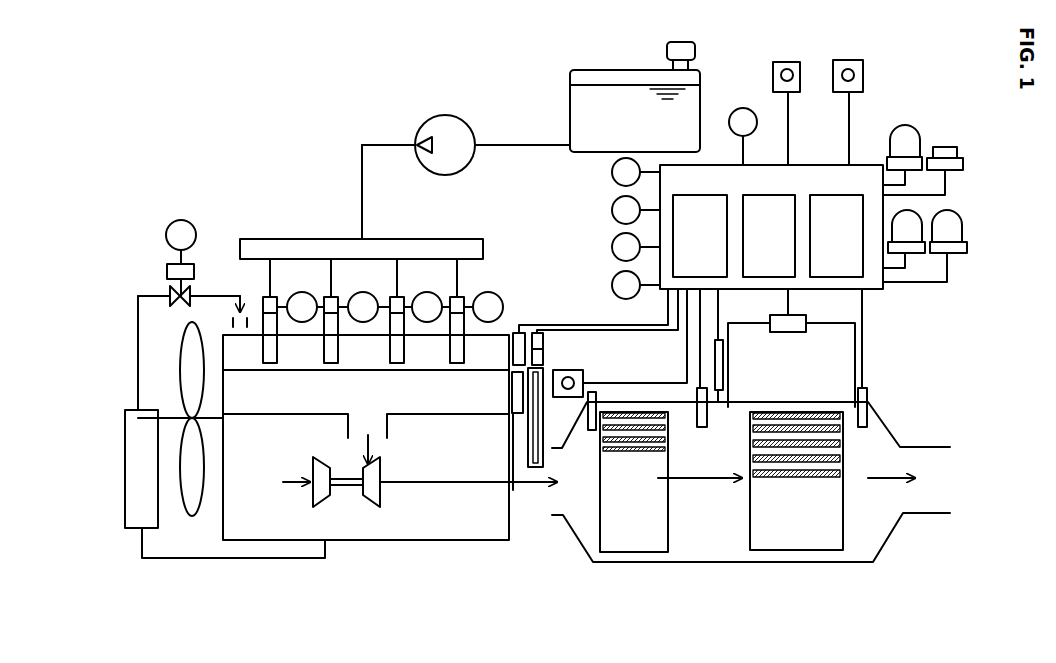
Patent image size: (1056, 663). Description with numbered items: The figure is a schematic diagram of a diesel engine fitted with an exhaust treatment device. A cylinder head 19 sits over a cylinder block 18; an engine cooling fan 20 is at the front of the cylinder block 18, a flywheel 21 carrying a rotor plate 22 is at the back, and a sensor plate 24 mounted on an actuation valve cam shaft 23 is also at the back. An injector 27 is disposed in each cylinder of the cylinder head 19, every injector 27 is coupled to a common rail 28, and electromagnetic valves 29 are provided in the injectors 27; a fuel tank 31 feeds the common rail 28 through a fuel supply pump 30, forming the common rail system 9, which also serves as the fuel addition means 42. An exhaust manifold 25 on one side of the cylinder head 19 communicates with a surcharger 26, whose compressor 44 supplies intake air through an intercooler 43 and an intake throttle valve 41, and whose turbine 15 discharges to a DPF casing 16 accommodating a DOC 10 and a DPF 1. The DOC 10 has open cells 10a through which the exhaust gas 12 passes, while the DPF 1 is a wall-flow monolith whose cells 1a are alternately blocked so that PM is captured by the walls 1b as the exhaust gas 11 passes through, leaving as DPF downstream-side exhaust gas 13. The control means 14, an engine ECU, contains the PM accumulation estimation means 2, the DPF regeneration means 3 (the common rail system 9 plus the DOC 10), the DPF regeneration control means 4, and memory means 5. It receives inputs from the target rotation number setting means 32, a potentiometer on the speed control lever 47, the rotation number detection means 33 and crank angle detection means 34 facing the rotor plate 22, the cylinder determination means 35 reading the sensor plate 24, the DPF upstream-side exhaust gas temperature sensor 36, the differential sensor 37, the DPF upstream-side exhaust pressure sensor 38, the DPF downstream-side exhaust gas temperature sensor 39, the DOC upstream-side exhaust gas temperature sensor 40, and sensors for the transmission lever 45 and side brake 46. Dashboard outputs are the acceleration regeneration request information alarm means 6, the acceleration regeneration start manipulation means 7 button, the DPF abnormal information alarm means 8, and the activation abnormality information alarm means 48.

The DPF 1 is at (802, 535).
The cells 1a is at (823, 450).
The walls 1b is at (780, 458).
The PM accumulation estimation means 2 is at (695, 203).
The DPF regeneration means 3 is at (481, 406).
The DPF regeneration control means 4 is at (765, 203).
The memory means 5 is at (836, 203).
The acceleration regeneration request information alarm means 6 is at (900, 135).
The acceleration regeneration start manipulation means 7 is at (945, 147).
The DPF abnormal information alarm means 8 is at (910, 238).
The common rail system 9 is at (490, 280).
The DOC 10 is at (633, 540).
The cells 10a is at (638, 432).
The exhaust gas 11 is at (700, 490).
The exhaust gas 12 is at (518, 483).
The DPF downstream-side exhaust gas 13 is at (883, 483).
The control means 14 is at (804, 176).
The turbine 15 is at (380, 495).
The DPF casing 16 is at (728, 563).
The cylinder block 18 is at (482, 542).
The cylinder head 19 is at (508, 330).
The engine cooling fan 20 is at (186, 352).
The flywheel 21 is at (548, 455).
The rotor plate 22 is at (541, 382).
The actuation valve cam shaft 23 is at (511, 392).
The sensor plate 24 is at (511, 414).
The exhaust manifold 25 is at (260, 407).
The surcharger 26 is at (350, 490).
The injector 27 is at (330, 355).
The common rail 28 is at (302, 239).
The electromagnetic valves 29 is at (325, 303).
The fuel supply pump 30 is at (457, 130).
The fuel tank 31 is at (697, 73).
The target rotation number setting means 32 is at (543, 404).
The rotation number detection means 33 is at (540, 333).
The crank angle detection means 34 is at (573, 320).
The cylinder determination means 35 is at (528, 320).
The DPF upstream-side exhaust gas temperature sensor 36 is at (699, 428).
The differential sensor 37 is at (790, 332).
The DPF upstream-side exhaust pressure sensor 38 is at (724, 362).
The DPF downstream-side exhaust gas temperature sensor 39 is at (862, 428).
The DOC upstream-side exhaust gas temperature sensor 40 is at (592, 431).
The intake throttle valve 41 is at (168, 288).
The fuel addition means 42 is at (409, 248).
The intercooler 43 is at (150, 500).
The compressor 44 is at (312, 495).
The transmission lever 45 is at (787, 70).
The side brake 46 is at (849, 70).
The speed control lever 47 is at (578, 365).
The activation abnormality information alarm means 48 is at (950, 237).